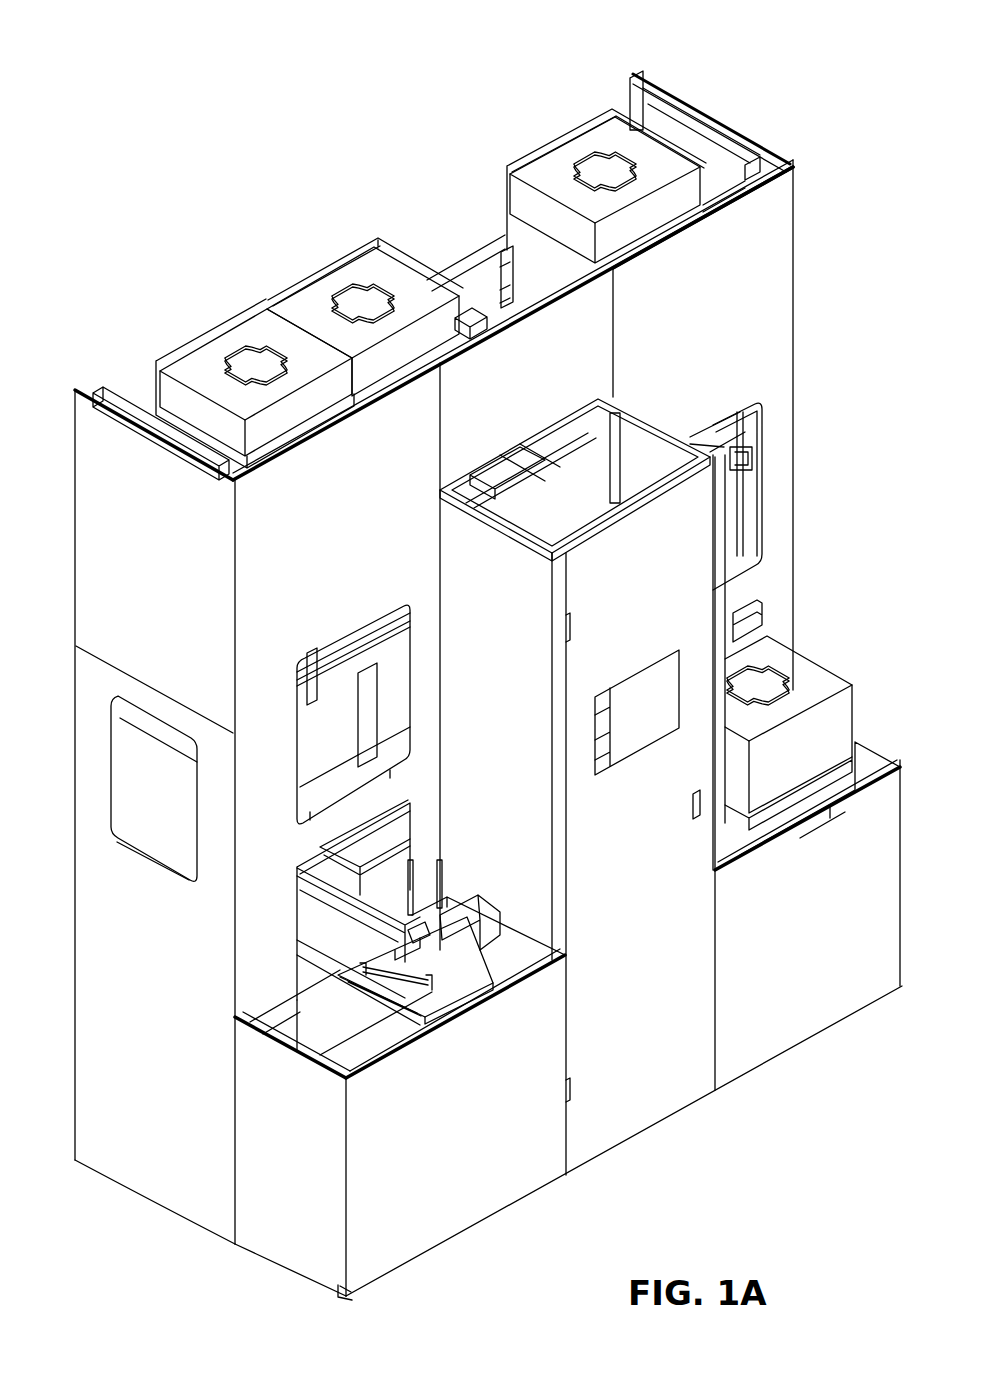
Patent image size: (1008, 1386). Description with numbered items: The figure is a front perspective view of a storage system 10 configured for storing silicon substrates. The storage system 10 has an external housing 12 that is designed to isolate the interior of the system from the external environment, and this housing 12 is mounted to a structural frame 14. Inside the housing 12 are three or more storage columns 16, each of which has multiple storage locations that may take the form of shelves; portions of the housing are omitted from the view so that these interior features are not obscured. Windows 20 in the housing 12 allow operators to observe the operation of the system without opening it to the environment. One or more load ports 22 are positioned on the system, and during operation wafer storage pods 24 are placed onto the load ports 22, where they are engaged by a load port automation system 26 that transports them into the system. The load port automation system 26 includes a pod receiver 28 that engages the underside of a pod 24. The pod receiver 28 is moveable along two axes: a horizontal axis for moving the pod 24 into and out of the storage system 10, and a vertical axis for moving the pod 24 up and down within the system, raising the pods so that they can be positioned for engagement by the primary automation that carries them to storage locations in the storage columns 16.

The storage system 10 is at (258, 82).
The external housing 12 is at (768, 300).
The structural frame 14 is at (724, 133).
The storage columns 16 is at (228, 317).
The windows 20 is at (142, 862).
The load ports 22 is at (305, 905).
The wafer storage pods 24 is at (332, 268).
The load port automation system 26 is at (335, 936).
The pod receiver 28 is at (413, 940).